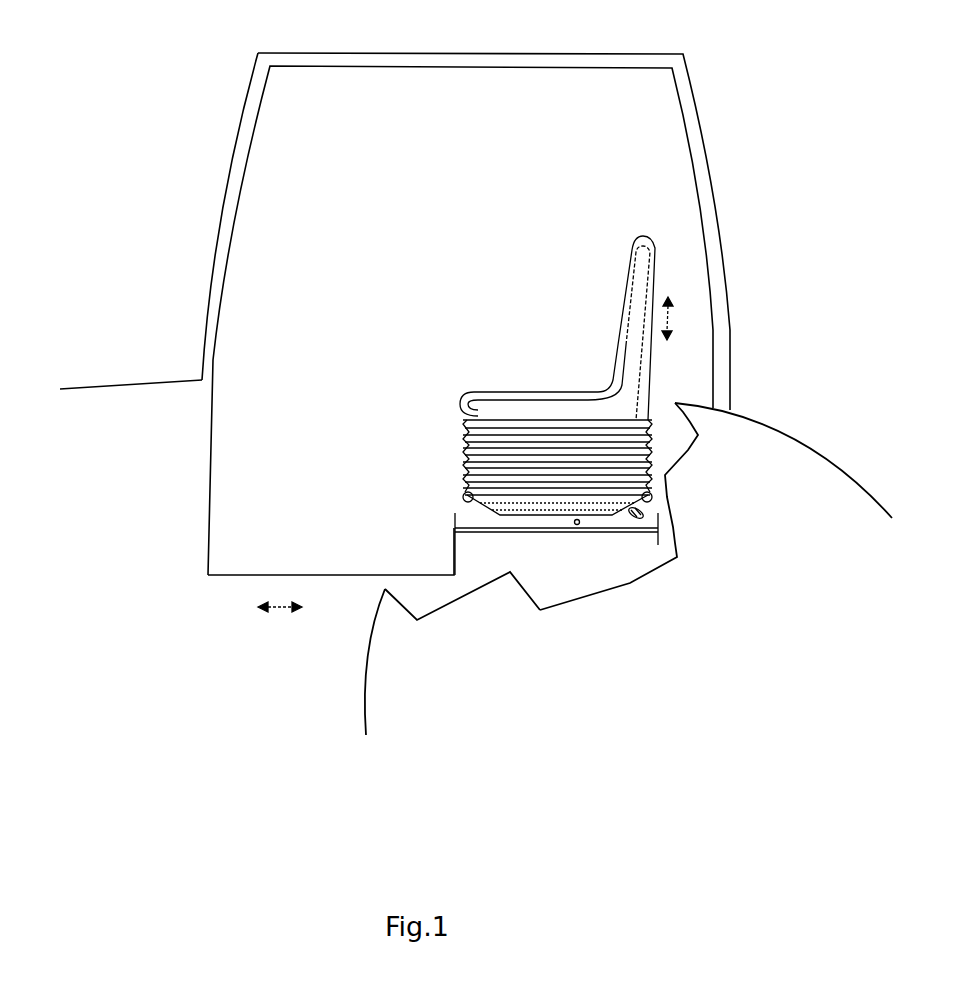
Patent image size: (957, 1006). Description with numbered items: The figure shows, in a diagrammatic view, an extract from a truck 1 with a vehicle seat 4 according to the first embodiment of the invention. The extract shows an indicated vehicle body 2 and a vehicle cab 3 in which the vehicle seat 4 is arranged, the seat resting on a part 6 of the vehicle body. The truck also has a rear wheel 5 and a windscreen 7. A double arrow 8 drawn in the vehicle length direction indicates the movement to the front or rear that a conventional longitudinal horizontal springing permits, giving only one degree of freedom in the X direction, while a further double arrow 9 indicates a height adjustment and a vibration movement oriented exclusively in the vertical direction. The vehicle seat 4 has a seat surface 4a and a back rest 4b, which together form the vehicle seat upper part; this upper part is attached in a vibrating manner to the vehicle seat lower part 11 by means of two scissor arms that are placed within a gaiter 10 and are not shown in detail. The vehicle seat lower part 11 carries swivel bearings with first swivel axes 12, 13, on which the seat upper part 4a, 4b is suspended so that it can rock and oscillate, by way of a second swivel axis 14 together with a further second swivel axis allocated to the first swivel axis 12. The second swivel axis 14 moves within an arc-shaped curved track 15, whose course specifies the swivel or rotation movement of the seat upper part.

The truck 1 is at (438, 312).
The vehicle body 2 is at (138, 400).
The vehicle cab 3 is at (690, 147).
The vehicle seat 4 is at (544, 312).
The seat surface 4a is at (480, 390).
The back rest 4b is at (621, 303).
The rear wheel 5 is at (400, 688).
The part of the vehicle body 6 is at (677, 557).
The windscreen 7 is at (213, 253).
The double arrow in the vehicle length direction 8 is at (278, 612).
The double arrow in the vertical direction 9 is at (673, 322).
The gaiter 10 is at (470, 424).
The vehicle seat lower part 11 is at (460, 520).
The first swivel axis 12 is at (468, 478).
The first swivel axis 13 is at (652, 495).
The second swivel axis 14 is at (638, 518).
The arc-shaped curved track 15 is at (628, 524).